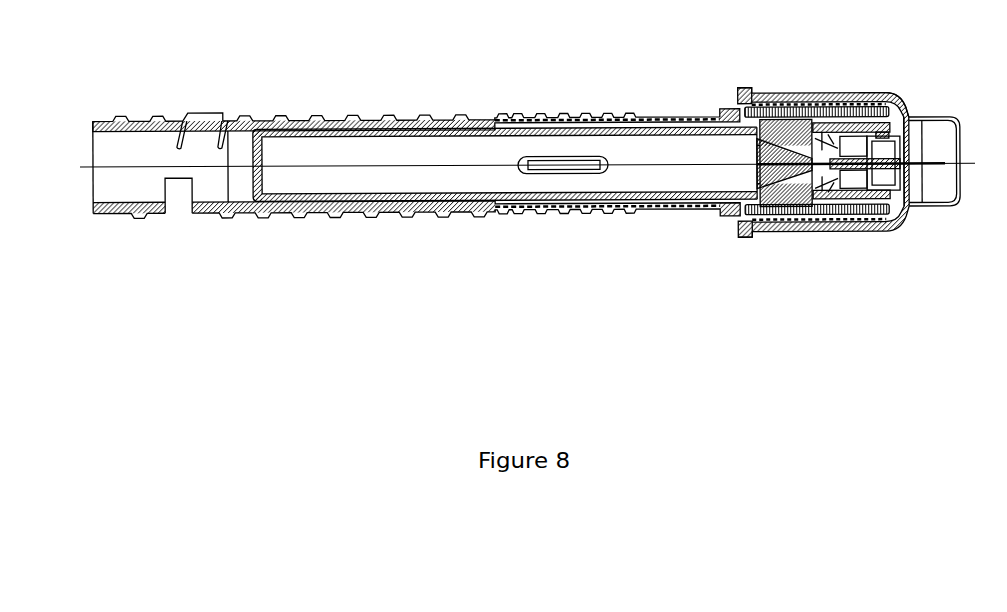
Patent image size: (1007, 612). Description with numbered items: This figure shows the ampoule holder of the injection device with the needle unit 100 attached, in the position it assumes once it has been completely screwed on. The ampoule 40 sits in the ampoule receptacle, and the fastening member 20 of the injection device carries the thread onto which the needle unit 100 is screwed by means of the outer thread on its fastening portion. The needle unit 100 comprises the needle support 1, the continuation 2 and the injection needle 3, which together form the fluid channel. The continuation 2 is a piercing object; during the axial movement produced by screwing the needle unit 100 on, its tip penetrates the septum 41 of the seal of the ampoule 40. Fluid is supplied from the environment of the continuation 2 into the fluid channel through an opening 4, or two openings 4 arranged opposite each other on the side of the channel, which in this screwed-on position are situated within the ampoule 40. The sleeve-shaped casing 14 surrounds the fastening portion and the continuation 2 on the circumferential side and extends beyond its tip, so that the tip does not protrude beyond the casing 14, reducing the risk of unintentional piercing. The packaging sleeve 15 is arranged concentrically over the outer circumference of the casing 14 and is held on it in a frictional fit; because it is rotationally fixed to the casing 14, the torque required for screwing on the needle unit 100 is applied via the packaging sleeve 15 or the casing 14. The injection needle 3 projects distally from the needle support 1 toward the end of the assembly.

The ampoule 40 is at (642, 117).
The continuation 2 is at (812, 98).
The packaging sleeve 15 is at (872, 98).
The casing 14 is at (902, 115).
The injection needle 3 is at (937, 158).
The opening 4 is at (763, 236).
The septum 41 is at (800, 236).
The fastening member 20 is at (840, 234).
The needle support 1 is at (863, 233).
The needle unit 100 is at (909, 234).